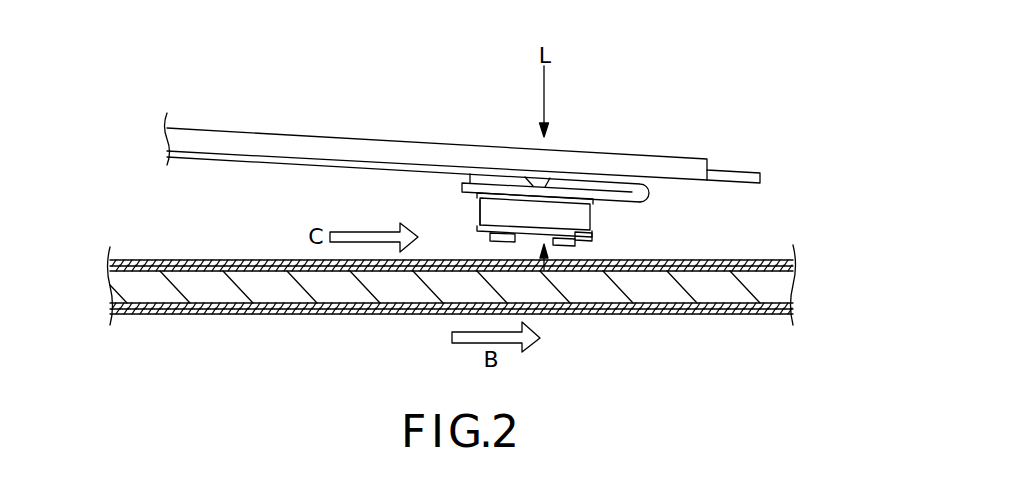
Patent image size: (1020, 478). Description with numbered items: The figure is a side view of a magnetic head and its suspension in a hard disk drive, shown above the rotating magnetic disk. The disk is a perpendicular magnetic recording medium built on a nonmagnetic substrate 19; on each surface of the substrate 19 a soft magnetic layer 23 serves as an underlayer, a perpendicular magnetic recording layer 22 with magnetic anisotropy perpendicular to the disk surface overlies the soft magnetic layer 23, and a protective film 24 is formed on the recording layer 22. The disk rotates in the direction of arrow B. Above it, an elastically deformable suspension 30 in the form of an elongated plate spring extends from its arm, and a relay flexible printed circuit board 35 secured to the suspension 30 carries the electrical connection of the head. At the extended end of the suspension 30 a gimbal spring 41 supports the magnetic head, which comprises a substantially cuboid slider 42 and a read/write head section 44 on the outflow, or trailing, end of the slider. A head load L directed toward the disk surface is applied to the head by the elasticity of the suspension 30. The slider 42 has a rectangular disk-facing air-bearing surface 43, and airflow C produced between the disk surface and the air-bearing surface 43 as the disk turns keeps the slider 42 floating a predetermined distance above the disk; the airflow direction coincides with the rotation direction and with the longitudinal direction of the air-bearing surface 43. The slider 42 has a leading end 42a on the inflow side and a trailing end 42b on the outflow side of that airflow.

The substrate 19 is at (225, 295).
The perpendicular magnetic recording layer 22 is at (190, 260).
The soft magnetic layer 23 is at (115, 273).
The protective film 24 is at (137, 260).
The suspension 30 is at (288, 143).
The relay flexible printed circuit board 35 is at (313, 165).
The gimbal spring 41 is at (470, 178).
The slider 42 is at (563, 205).
The leading end 42a is at (478, 217).
The trailing end 42b is at (593, 231).
The air-bearing surface 43 is at (544, 270).
The read/write head section 44 is at (583, 218).